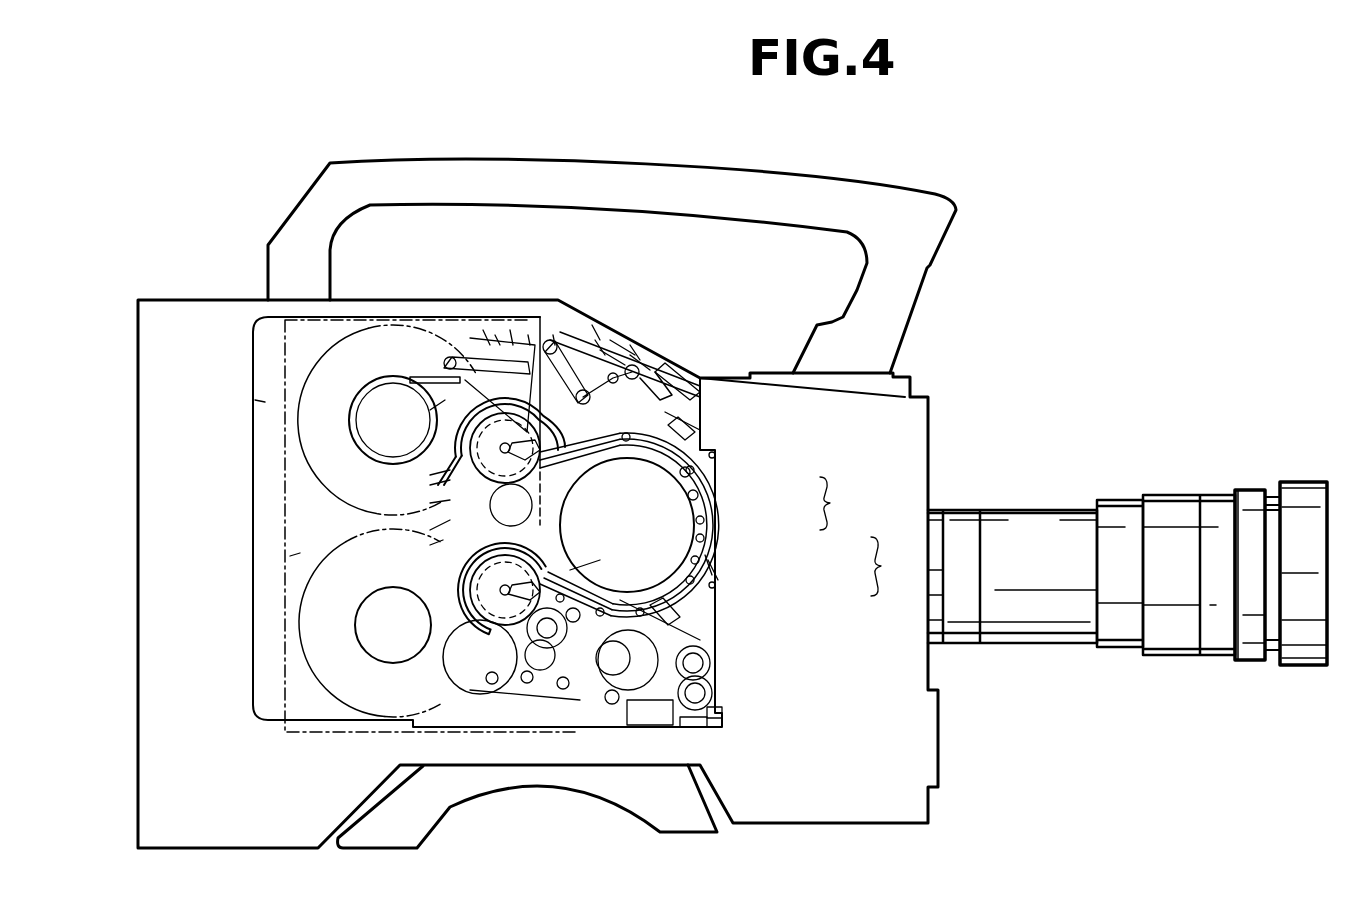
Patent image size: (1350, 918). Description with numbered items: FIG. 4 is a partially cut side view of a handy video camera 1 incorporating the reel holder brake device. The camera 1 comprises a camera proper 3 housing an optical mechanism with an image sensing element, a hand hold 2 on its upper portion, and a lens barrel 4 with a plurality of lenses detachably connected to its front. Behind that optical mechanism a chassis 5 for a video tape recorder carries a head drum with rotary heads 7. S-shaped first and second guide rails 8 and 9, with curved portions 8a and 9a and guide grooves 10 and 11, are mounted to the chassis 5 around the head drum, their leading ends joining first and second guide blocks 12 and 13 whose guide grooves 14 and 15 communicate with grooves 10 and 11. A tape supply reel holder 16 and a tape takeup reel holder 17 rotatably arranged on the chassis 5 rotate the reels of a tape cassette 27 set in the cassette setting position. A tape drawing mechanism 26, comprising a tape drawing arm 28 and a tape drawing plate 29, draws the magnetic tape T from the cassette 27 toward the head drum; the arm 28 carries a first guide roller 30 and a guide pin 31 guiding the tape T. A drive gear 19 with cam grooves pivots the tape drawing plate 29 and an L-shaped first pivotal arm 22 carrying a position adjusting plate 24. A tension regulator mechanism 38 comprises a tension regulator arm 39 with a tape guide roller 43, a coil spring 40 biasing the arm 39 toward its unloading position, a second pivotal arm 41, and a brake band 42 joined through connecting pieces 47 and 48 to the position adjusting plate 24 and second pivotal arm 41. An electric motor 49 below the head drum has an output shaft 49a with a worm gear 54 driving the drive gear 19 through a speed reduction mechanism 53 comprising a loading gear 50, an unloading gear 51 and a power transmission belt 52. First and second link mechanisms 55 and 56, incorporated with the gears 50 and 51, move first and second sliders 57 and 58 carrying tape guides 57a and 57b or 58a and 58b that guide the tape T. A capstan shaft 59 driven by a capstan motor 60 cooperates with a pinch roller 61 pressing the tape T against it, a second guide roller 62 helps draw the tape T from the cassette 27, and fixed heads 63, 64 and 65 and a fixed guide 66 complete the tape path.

The handy video camera 1 is at (1021, 314).
The hand hold 2 is at (583, 167).
The camera proper 3 is at (184, 312).
The lens barrel 4 is at (1033, 522).
The chassis 5 is at (265, 400).
The rotary heads 7 is at (705, 443).
The first guide rail 8 is at (450, 520).
The curved portion 8a is at (450, 490).
The second guide rail 9 is at (443, 540).
The curved portion 9a is at (457, 575).
The guide groove 10 is at (560, 455).
The guide groove 11 is at (568, 568).
The first guide block 12 is at (680, 506).
The second guide block 13 is at (710, 563).
The guide groove 14 is at (680, 475).
The guide groove 15 is at (712, 573).
The tape supply reel holder 16 is at (363, 407).
The tape takeup reel holder 17 is at (367, 630).
The drive gear 19 is at (490, 335).
The first pivotal arm 22 is at (450, 480).
The position adjusting plate 24 is at (445, 400).
The tape drawing mechanism 26 is at (595, 345).
The tape cassette 27 is at (300, 553).
The tape drawing arm 28 is at (633, 350).
The tape drawing plate 29 is at (530, 340).
The first guide roller 30 is at (663, 380).
The guide pin 31 is at (643, 367).
The tension regulator mechanism 38 is at (553, 340).
The tension regulator arm 39 is at (590, 330).
The coil spring 40 is at (500, 340).
The second pivotal arm 41 is at (513, 330).
The brake band 42 is at (372, 385).
The tape guide roller 43 is at (590, 398).
The connecting piece 47 is at (430, 340).
The connecting piece 48 is at (450, 470).
The electric motor 49 is at (690, 720).
The output shaft 49a is at (715, 722).
The loading gear 50 is at (450, 500).
The unloading gear 51 is at (512, 700).
The power transmission belt 52 is at (548, 700).
The speed reduction mechanism 53 is at (672, 730).
The worm gear 54 is at (707, 718).
The first link mechanism 55 is at (683, 423).
The second link mechanism 56 is at (590, 588).
The first slider 57 is at (843, 503).
The tape guide 57a is at (698, 495).
The tape guide 57b is at (690, 472).
The second slider 58 is at (893, 566).
The tape guide 58a is at (723, 533).
The tape guide 58b is at (779, 574).
The capstan shaft 59 is at (645, 728).
The capstan motor 60 is at (592, 700).
The pinch roller 61 is at (572, 705).
The second guide roller 62 is at (615, 720).
The fixed head 63 is at (680, 382).
The fixed head 64 is at (684, 437).
The fixed head 65 is at (660, 613).
The fixed guide 66 is at (540, 700).
The magnetic tape T is at (470, 690).